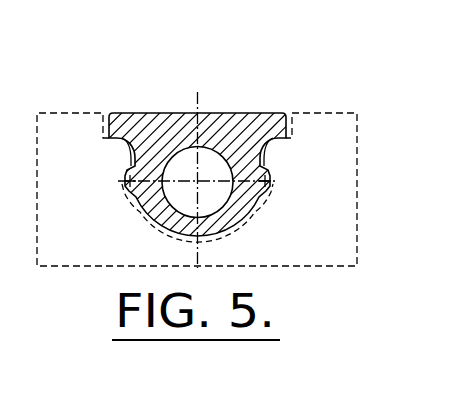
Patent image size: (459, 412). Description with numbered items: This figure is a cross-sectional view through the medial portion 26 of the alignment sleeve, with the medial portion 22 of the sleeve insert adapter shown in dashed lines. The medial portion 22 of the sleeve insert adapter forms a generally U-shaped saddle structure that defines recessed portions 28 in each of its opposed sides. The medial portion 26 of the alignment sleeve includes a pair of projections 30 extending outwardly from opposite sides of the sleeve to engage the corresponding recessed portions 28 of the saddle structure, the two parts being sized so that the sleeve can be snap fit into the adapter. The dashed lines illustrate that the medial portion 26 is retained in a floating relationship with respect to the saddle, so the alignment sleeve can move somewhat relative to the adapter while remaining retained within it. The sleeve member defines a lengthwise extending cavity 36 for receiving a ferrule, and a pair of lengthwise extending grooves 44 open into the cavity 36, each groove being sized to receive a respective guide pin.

The medial portion of the sleeve insert adapter 22 is at (358, 245).
The medial portion of the alignment sleeve 26 is at (228, 93).
The recessed portions 28 is at (127, 188).
The projections 30 is at (130, 167).
The lengthwise extending cavity 36 is at (180, 162).
The lengthwise extending grooves 44 is at (157, 163).